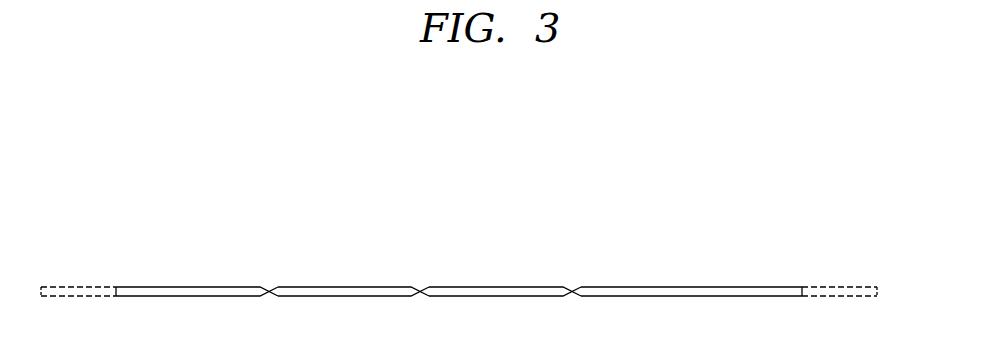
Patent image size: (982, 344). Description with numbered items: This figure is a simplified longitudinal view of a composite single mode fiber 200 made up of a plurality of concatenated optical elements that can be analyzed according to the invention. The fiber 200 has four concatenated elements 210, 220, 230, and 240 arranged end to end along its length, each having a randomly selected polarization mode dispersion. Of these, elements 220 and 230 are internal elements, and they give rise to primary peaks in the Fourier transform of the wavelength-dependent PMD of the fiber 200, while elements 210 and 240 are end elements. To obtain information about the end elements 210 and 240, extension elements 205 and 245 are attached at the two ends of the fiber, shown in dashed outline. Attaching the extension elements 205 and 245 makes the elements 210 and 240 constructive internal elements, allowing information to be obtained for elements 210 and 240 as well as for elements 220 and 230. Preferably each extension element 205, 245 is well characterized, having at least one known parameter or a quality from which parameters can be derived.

The composite single mode fiber 200 is at (450, 187).
The extension element 205 is at (79, 287).
The end element 210 is at (190, 287).
The internal element 220 is at (345, 287).
The internal element 230 is at (497, 287).
The end element 240 is at (690, 287).
The extension element 245 is at (839, 287).